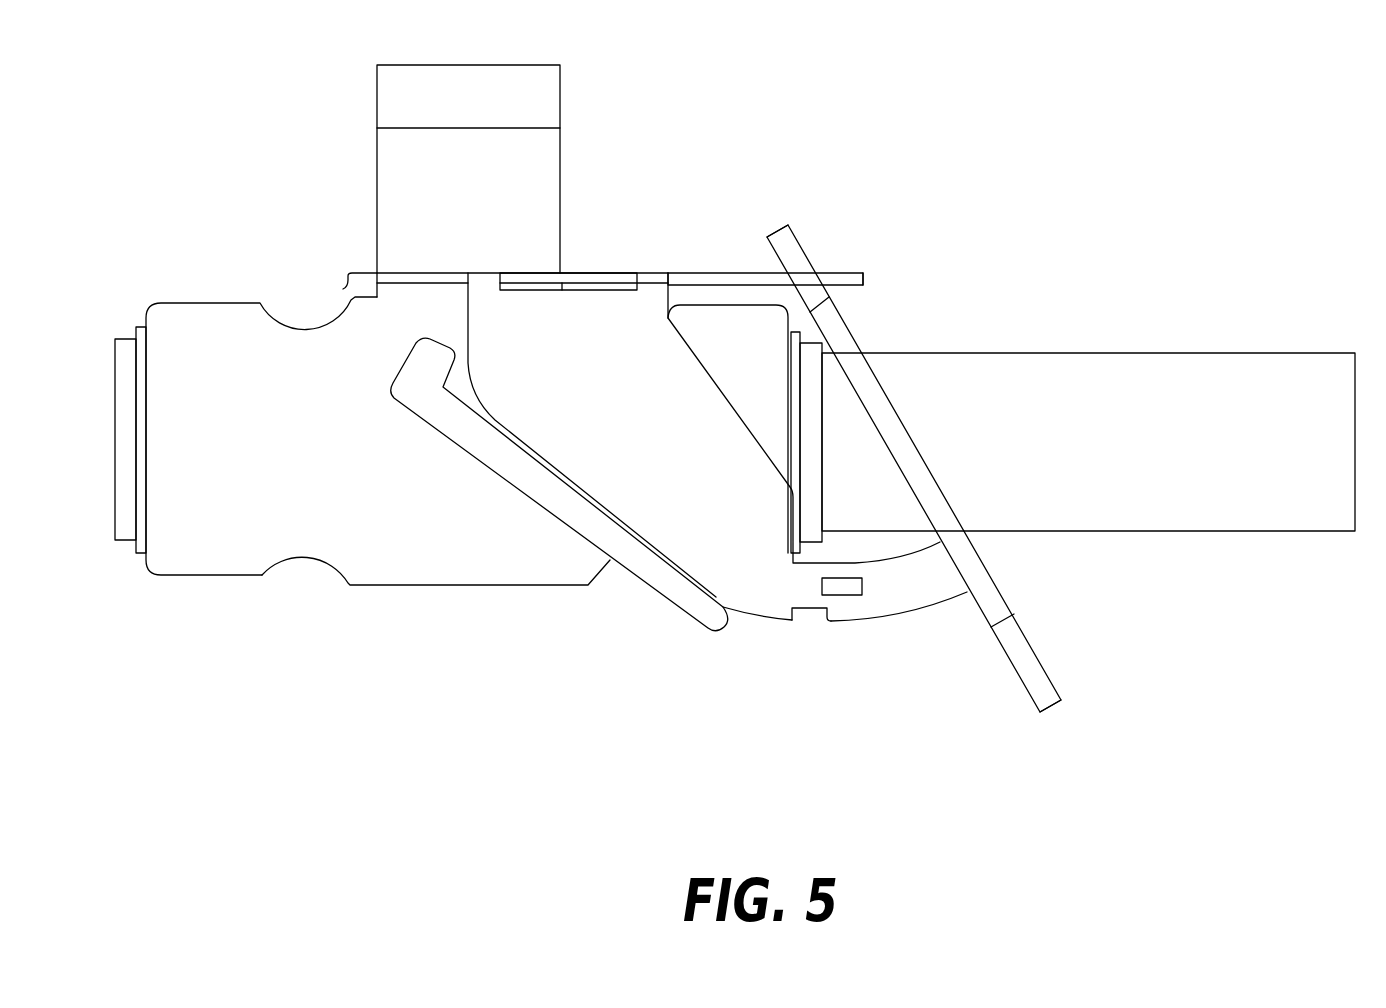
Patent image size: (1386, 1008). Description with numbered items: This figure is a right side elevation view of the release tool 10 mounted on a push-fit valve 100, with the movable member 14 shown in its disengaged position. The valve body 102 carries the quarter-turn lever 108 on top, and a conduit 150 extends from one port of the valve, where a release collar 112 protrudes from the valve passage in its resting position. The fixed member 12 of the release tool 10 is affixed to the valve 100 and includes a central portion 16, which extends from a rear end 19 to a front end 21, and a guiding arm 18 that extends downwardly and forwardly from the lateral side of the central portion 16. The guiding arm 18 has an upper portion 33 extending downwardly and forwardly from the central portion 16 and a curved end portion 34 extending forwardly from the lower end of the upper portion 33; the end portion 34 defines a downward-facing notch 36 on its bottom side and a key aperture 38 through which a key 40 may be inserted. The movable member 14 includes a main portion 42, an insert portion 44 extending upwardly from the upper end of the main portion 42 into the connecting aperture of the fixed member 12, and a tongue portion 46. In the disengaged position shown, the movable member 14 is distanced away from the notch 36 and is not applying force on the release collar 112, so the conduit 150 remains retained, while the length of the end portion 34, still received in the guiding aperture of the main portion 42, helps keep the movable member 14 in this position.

The release tool 10 is at (960, 650).
The fixed member 12 is at (650, 285).
The movable member 14 is at (1010, 610).
The central portion 16 is at (714, 272).
The guiding arm 18 is at (735, 590).
The rear end 19 is at (343, 289).
The front end 21 is at (863, 278).
The upper portion 33 is at (614, 392).
The end portion 34 is at (917, 598).
The notch 36 is at (807, 610).
The key aperture 38 is at (848, 596).
The key 40 is at (652, 577).
The main portion 42 is at (853, 335).
The insert portion 44 is at (790, 247).
The tongue portion 46 is at (1052, 677).
The push-fit valve 100 is at (348, 237).
The valve body 102 is at (515, 568).
The lever 108 is at (533, 85).
The release collar 112 is at (813, 416).
The conduit 150 is at (1145, 453).